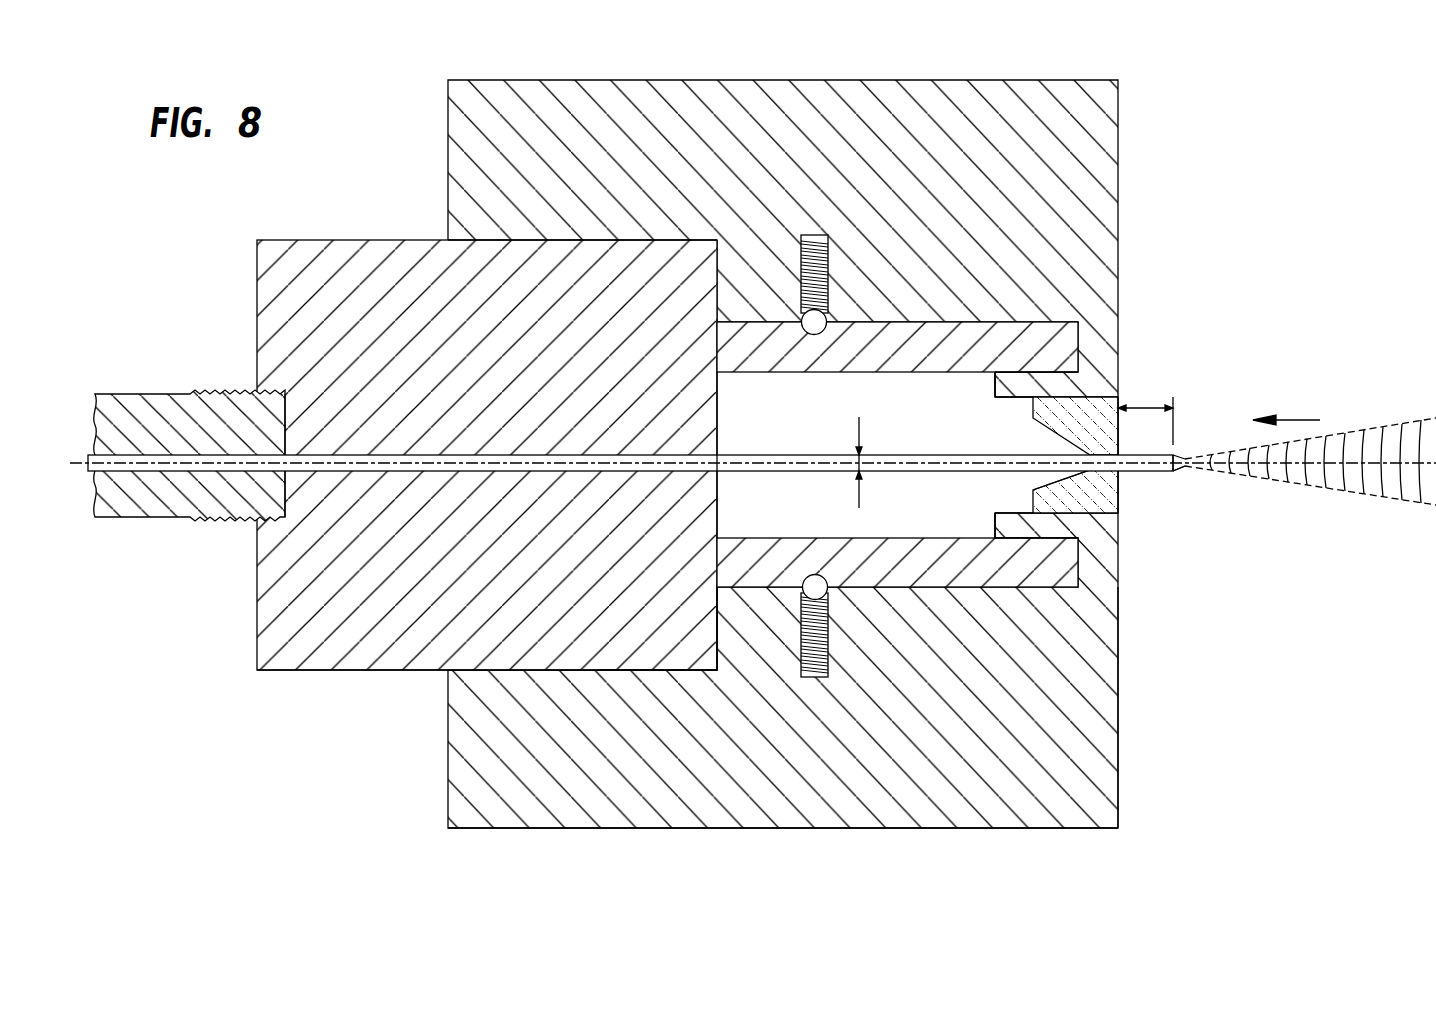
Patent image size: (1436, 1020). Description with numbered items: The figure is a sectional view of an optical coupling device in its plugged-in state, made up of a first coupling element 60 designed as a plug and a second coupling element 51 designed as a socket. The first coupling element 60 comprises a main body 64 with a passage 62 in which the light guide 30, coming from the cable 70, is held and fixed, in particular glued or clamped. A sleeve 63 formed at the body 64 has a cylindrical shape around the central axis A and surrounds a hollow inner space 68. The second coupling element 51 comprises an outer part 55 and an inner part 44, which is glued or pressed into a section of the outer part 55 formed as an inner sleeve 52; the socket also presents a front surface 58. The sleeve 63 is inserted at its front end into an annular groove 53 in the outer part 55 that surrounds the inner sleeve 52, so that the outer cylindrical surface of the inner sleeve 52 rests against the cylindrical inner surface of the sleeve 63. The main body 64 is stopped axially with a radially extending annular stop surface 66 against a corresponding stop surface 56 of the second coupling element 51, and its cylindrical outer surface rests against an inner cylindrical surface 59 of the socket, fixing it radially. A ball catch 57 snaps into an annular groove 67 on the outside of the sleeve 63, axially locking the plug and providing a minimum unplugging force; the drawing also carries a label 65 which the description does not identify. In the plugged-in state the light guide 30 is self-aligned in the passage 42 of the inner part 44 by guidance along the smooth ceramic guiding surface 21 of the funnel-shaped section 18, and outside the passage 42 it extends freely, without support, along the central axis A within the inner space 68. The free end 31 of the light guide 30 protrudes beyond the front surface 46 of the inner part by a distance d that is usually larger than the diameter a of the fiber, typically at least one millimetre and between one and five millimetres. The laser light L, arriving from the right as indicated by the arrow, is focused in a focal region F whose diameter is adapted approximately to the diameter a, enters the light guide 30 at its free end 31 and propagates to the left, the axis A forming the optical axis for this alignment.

The funnel-shaped section 18 is at (1058, 437).
The guiding surface 21 is at (1047, 474).
The light guide 30 is at (148, 471).
The free end 31 is at (1180, 456).
The passage 42 is at (1040, 494).
The inner part 44 is at (1118, 538).
The front surface 46 is at (1119, 441).
The second coupling element, socket 51 is at (1100, 762).
The inner sleeve 52 is at (1003, 382).
The groove 53 is at (1078, 340).
The outer part 55 is at (1093, 198).
The stop surface 56 is at (720, 655).
The ball catch 57 is at (827, 592).
The front surface 58 is at (1118, 697).
The inner surface 59 is at (622, 243).
The first coupling element, plug 60 is at (318, 656).
The passage 62 is at (313, 477).
The sleeve 63 is at (808, 352).
The body 64 is at (398, 657).
The holder block top 65 is at (520, 238).
The stop surface 66 is at (713, 632).
The annular groove 67 is at (813, 577).
The inner space 68 is at (856, 455).
The cable 70 is at (160, 410).
The longitudinal central axis A is at (583, 455).
The focal region F is at (1190, 472).
The laser light L is at (1292, 447).
The diameter a is at (861, 482).
The distance d is at (1148, 408).